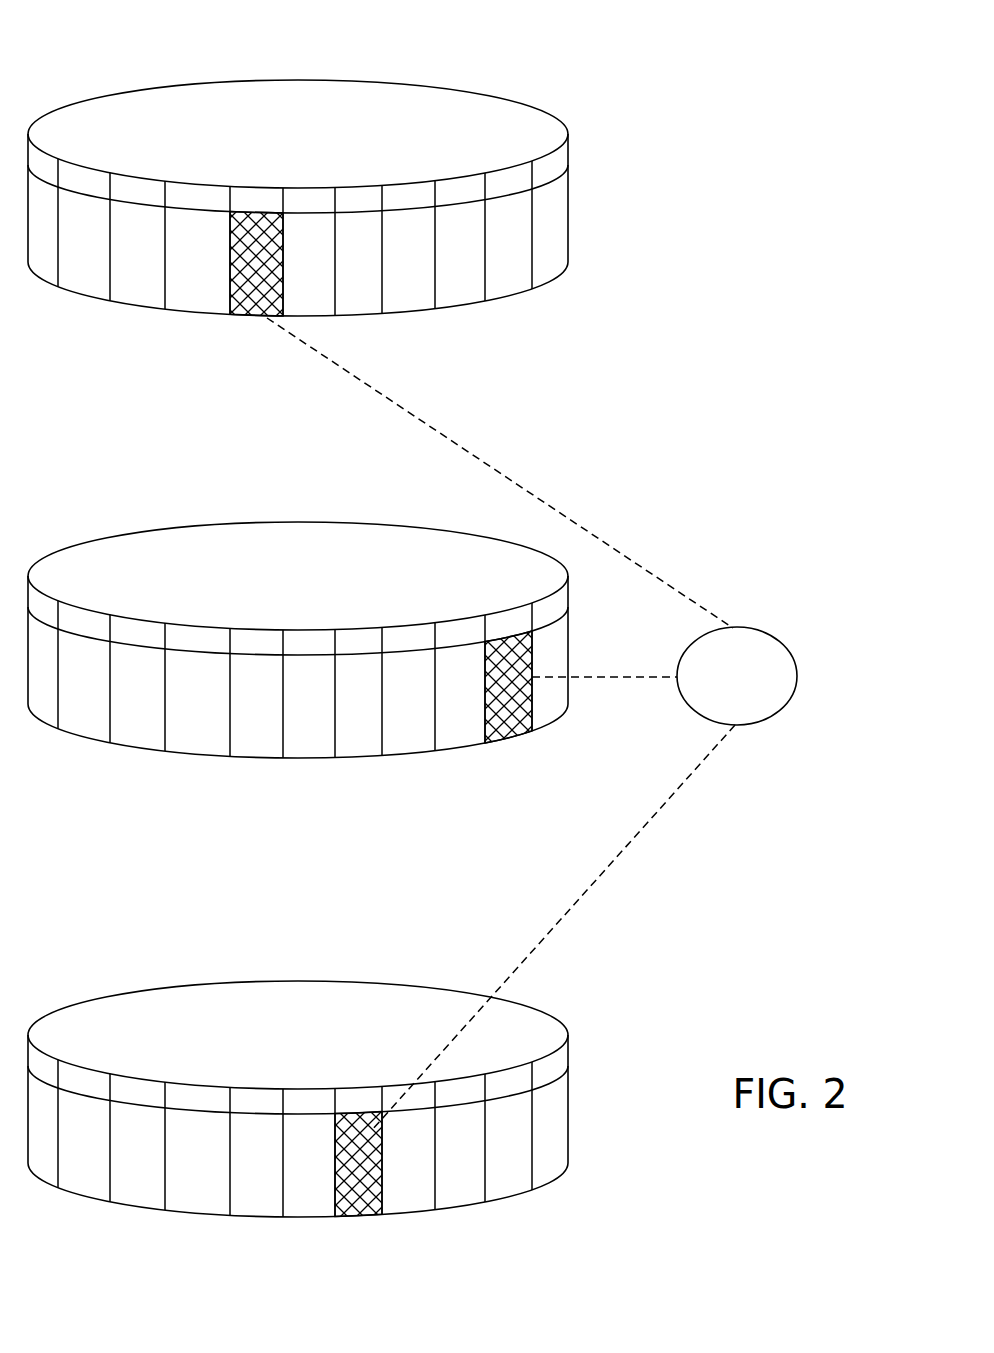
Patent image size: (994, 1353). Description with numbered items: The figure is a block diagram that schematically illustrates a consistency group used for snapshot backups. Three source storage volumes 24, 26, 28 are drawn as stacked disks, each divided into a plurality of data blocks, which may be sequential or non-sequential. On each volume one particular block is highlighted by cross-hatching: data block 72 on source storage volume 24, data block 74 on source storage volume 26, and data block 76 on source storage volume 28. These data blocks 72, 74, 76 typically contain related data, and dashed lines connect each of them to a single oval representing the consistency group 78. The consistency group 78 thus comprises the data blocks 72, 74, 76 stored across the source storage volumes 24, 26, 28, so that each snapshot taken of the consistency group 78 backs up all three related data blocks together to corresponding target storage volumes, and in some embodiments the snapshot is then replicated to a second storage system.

The source storage volume 24 is at (120, 45).
The source storage volume 26 is at (298, 638).
The source storage volume 28 is at (298, 1094).
The data block 72 is at (262, 318).
The data block 74 is at (508, 714).
The data block 76 is at (343, 1183).
The consistency group 78 is at (557, 724).